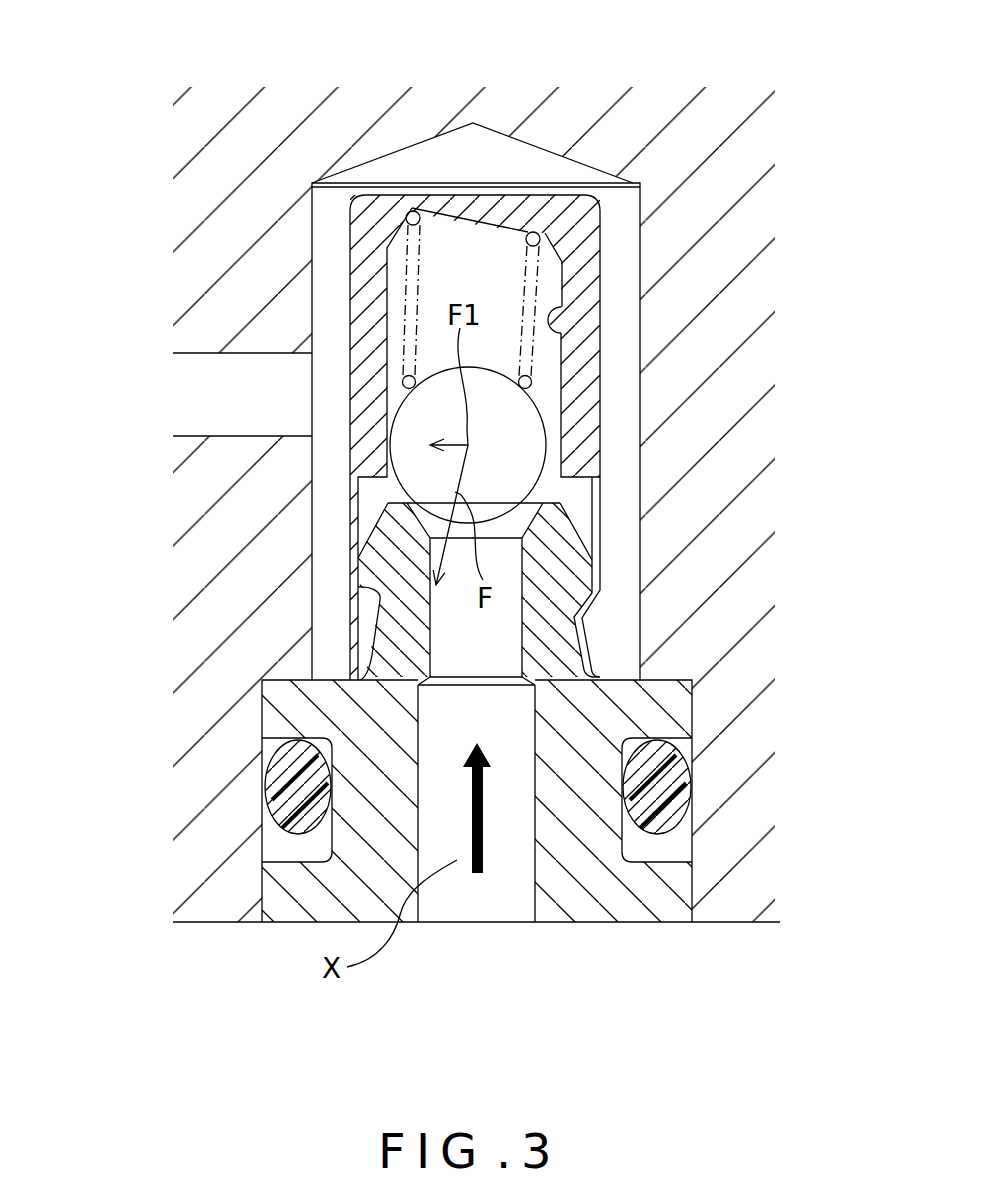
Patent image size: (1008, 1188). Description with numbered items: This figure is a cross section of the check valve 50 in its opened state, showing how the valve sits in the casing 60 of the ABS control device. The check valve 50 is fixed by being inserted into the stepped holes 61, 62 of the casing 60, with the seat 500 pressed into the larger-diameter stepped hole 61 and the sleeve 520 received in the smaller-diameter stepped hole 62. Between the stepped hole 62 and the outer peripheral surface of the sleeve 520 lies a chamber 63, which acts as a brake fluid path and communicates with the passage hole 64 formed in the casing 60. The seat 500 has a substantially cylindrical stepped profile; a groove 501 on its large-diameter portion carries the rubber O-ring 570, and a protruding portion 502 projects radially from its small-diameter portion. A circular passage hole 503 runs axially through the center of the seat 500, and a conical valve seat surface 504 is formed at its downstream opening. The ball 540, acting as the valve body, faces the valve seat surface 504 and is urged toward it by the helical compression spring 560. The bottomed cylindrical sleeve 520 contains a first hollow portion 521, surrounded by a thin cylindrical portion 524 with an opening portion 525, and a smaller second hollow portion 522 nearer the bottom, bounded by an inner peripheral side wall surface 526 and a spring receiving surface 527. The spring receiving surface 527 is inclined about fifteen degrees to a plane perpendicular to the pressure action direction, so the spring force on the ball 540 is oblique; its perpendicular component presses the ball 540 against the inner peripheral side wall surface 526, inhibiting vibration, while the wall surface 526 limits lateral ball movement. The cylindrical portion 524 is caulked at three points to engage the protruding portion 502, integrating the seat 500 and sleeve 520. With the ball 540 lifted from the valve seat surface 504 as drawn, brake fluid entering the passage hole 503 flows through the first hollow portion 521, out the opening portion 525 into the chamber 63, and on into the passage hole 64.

The check valve 50 is at (331, 247).
The casing 60 is at (223, 153).
The stepped hole 61 is at (262, 847).
The stepped hole 62 is at (312, 517).
The chamber 63 is at (332, 290).
The passage hole 64 is at (245, 353).
The seat 500 is at (605, 912).
The groove 501 is at (630, 852).
The protruding portion 502 is at (583, 573).
The passage hole 503 is at (535, 878).
The valve seat surface 504 is at (580, 537).
The sleeve 520 is at (372, 214).
The first hollow portion 521 is at (565, 492).
The second hollow portion 522 is at (500, 277).
The cylindrical portion 524 is at (585, 508).
The opening portion 525 is at (352, 546).
The inner peripheral side wall surface 526 is at (562, 332).
The spring receiving surface 527 is at (640, 198).
The ball 540 is at (422, 460).
The helical compression spring 560 is at (533, 374).
The O-ring 570 is at (667, 777).